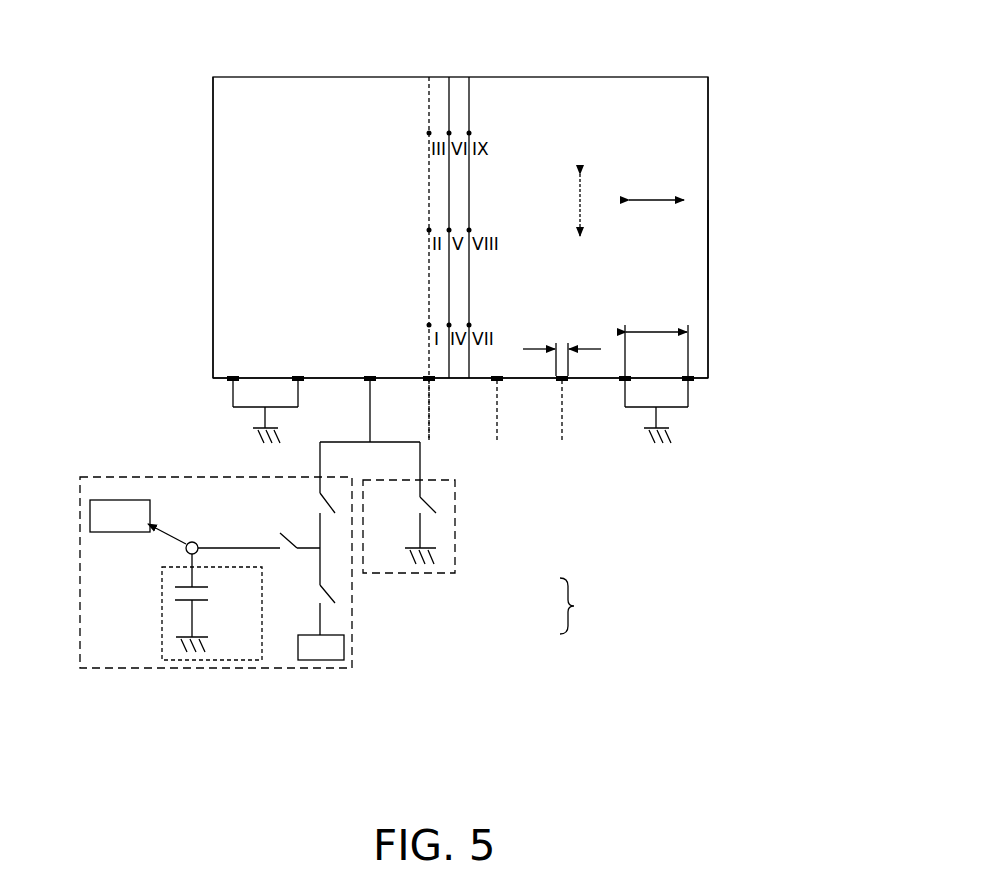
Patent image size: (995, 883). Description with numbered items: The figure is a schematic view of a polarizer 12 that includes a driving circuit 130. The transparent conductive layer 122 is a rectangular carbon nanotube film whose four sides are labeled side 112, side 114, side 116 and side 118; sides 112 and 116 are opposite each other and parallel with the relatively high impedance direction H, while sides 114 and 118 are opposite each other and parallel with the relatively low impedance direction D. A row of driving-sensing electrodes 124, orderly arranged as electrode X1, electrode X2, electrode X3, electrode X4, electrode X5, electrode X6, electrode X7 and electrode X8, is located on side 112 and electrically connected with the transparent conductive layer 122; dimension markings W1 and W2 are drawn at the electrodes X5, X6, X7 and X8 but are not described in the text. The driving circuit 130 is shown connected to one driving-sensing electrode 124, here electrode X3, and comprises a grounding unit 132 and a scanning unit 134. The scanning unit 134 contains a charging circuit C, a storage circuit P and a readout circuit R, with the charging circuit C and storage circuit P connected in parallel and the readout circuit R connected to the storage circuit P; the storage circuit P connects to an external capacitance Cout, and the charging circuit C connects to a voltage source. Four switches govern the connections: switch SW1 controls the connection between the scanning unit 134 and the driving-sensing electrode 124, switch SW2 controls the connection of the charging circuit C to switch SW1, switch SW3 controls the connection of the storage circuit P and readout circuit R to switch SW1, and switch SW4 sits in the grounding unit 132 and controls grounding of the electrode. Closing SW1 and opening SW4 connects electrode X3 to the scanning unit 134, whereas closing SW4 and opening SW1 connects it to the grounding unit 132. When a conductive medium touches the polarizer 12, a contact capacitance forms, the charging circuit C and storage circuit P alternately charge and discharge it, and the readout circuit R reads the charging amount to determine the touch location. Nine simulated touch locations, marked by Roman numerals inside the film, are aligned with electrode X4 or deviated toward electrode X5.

The side 116 is at (592, 75).
The side 118 is at (710, 160).
The side 114 is at (211, 215).
The transparent conductive layer 122 is at (710, 272).
The side 112 is at (527, 384).
The driving-sensing electrodes 124 is at (690, 382).
The polarizer 12 is at (724, 507).
The driving circuit 130 is at (587, 606).
The grounding unit 132 is at (455, 565).
The scanning unit 134 is at (352, 660).
The readout circuit R is at (116, 499).
The storage circuit P is at (162, 638).
The charging circuit C is at (322, 660).
The external capacitance Cout is at (212, 607).
The switch SW1 is at (293, 501).
The switch SW2 is at (288, 591).
The switch SW3 is at (234, 534).
The switch SW4 is at (409, 507).
The electrode X1 is at (235, 379).
The electrode X2 is at (300, 379).
The electrode X3 is at (369, 397).
The electrode X4 is at (413, 396).
The electrode X5 is at (501, 396).
The electrode X6 is at (581, 396).
The electrode X7 is at (640, 379).
The electrode X8 is at (704, 379).
The width W1 is at (562, 347).
The width W2 is at (656, 338).
The relatively low impedance direction D is at (590, 205).
The relatively high impedance direction H is at (656, 186).